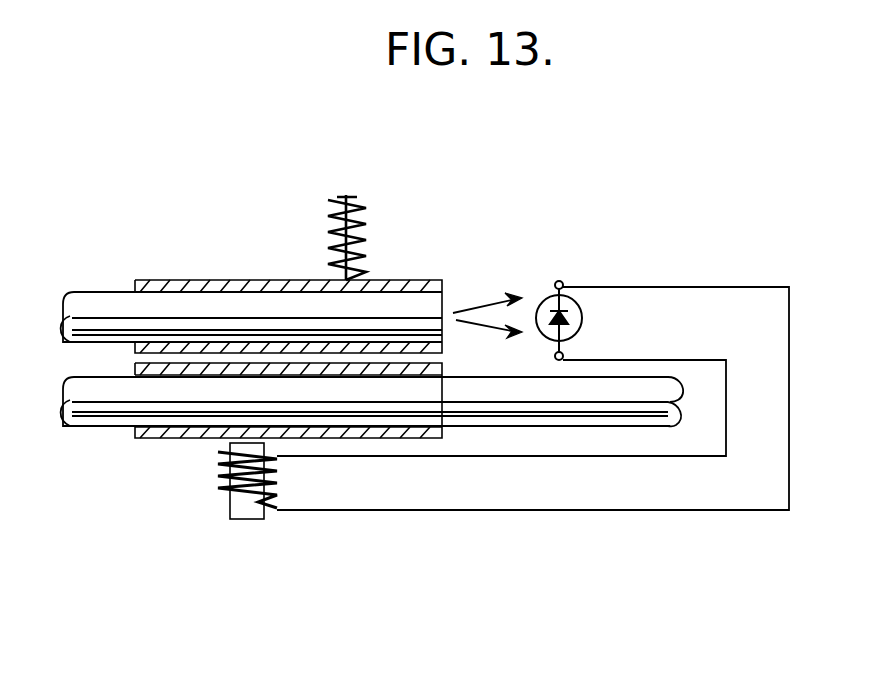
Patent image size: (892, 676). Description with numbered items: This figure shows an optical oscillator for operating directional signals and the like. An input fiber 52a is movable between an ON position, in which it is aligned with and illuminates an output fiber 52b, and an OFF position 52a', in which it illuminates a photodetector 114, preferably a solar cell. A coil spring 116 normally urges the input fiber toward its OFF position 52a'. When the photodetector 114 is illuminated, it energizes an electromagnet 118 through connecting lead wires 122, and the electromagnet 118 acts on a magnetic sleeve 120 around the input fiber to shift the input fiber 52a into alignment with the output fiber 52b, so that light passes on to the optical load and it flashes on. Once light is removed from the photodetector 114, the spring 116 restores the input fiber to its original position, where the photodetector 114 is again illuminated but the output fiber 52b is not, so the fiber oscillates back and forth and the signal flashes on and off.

The OFF position of input fiber 52a' is at (243, 289).
The input fiber 52a is at (251, 426).
The output fiber 52b is at (535, 430).
The photodetector 114 is at (583, 318).
The coil spring 116 is at (370, 234).
The electromagnet 118 is at (229, 508).
The magnetic sleeve 120 is at (164, 440).
The connecting lead wires 122 is at (488, 457).